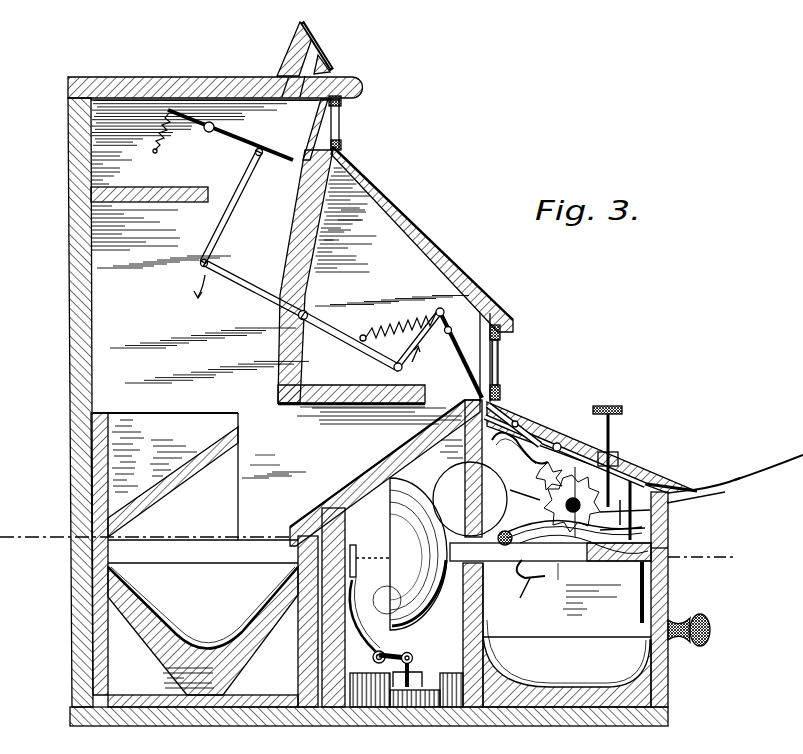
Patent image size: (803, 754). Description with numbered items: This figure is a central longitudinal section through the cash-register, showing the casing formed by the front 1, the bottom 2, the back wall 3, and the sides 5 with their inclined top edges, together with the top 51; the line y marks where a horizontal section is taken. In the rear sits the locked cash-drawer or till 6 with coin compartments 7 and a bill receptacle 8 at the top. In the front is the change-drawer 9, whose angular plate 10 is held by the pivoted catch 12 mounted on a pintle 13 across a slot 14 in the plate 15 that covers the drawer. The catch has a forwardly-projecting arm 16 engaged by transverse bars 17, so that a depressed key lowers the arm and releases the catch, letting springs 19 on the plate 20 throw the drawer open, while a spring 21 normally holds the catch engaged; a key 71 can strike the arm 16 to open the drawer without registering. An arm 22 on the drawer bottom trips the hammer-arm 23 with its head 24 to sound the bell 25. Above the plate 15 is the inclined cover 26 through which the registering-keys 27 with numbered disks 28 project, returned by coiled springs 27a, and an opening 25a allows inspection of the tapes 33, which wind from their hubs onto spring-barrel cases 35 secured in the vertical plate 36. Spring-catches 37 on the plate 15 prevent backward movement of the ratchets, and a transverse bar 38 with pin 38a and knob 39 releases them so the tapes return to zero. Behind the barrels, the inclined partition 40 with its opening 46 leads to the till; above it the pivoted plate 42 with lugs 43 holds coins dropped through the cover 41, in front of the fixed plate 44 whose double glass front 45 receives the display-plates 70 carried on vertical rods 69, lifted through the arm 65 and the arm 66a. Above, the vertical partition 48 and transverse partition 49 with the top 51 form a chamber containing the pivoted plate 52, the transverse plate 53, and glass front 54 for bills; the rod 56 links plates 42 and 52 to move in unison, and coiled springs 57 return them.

The front of the casing 1 is at (688, 534).
The bottom 2 is at (369, 730).
The back wall 3 is at (61, 402).
The sides 5 is at (274, 447).
The cash-drawer or till 6 is at (145, 526).
The compartments or cash-receptacles 7 is at (213, 621).
The receptacle 8 is at (164, 554).
The change-drawer 9 is at (557, 635).
The angular plate 10 is at (527, 582).
The pivoted catch 12 is at (545, 562).
The pintle 13 is at (562, 566).
The slot 14 is at (583, 548).
The plate 15 is at (620, 557).
The forwardly-projecting arm 16 is at (633, 511).
The transverse bars 17 is at (615, 511).
The springs 19 is at (365, 614).
The plate 20 is at (376, 646).
The spring 21 is at (548, 540).
The rearwardly-extending arm 22 is at (425, 682).
The pivoted hammer-arm 23 is at (401, 662).
The head 24 is at (420, 620).
The bell or gong 25 is at (428, 503).
The opening 25a is at (562, 418).
The inclined plate or cover 26 is at (548, 458).
The registering-keys 27 is at (612, 432).
The coiled springs 27a is at (620, 460).
The disks 28 is at (608, 398).
The tapes 33 is at (510, 518).
The cases 35 is at (462, 490).
The vertical plate 36 is at (426, 438).
The spring-catches 37 is at (668, 548).
The transverse bar 38 is at (623, 534).
The pin 38a is at (710, 498).
The knob 39 is at (672, 482).
The inclined transverse partition 40 is at (342, 584).
The cover 41 is at (422, 239).
The transverse pivoted plate 42 is at (379, 343).
The lugs 43 is at (458, 332).
The fixed plate 44 is at (501, 338).
The double glass front 45 is at (500, 360).
The transverse opening 46 is at (428, 396).
The vertical partition 48 is at (290, 305).
The transverse partition 49 is at (351, 251).
The top 51 is at (215, 76).
The pivoted plate 52 is at (225, 135).
The transverse plate 53 is at (343, 103).
The glass front 54 is at (343, 134).
The rod or bar 56 is at (238, 302).
The coiled springs 57 is at (294, 227).
The forwardly-extending arm 65 is at (740, 480).
The arm 66a is at (541, 466).
The vertical rods 69 is at (519, 445).
The display-plates 70 is at (501, 393).
The key 71 is at (548, 418).
The line y y is at (708, 557).